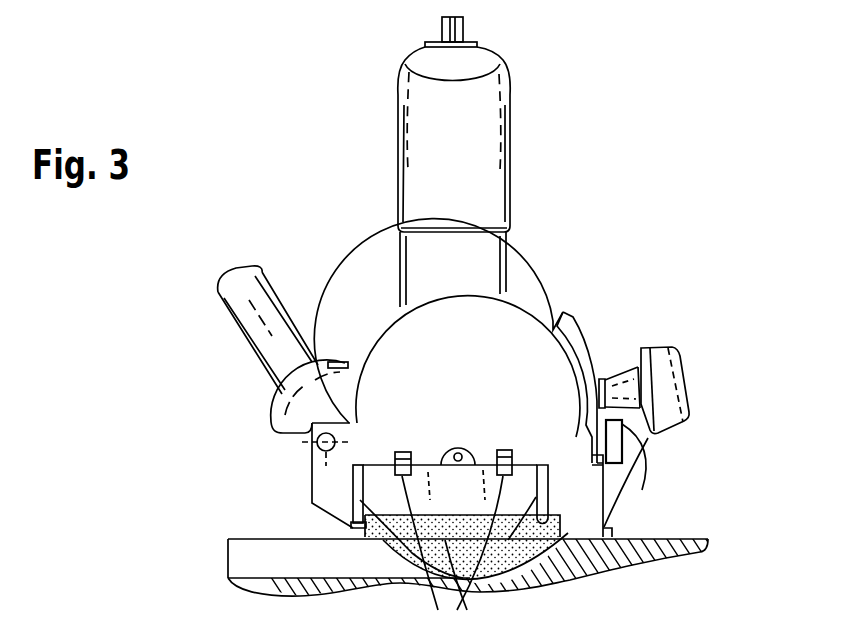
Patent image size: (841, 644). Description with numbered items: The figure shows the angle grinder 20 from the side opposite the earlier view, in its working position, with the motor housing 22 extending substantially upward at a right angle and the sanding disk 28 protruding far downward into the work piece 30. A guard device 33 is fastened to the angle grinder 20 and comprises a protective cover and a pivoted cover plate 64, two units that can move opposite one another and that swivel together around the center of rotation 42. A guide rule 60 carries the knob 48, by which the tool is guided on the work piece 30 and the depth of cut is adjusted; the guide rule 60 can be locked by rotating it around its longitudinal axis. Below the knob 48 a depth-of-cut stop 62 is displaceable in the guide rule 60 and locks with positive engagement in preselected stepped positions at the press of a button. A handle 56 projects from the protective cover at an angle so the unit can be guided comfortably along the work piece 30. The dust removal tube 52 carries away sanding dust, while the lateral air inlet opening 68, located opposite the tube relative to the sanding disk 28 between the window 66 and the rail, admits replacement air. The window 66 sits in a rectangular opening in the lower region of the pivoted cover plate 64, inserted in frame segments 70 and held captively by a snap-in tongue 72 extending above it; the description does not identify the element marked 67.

The angle grinder 20 is at (371, 128).
The motor housing 22 is at (430, 176).
The guard device 33 is at (533, 292).
The guide rule 60 is at (574, 333).
The knob 48 is at (664, 375).
The handle 56 is at (232, 276).
The center of rotation 42 is at (309, 459).
The pivoted cover plate 64 is at (330, 484).
The lateral air inlet opening 68 is at (352, 530).
The window 66 is at (373, 478).
The snap-in tongue 72 is at (458, 448).
The holding clamp 67 is at (533, 462).
The depth-of-cut stop 62 is at (638, 455).
The dust removal tube 52 is at (614, 482).
The sanding disk 28 is at (412, 556).
The frame segments 70 is at (452, 559).
The work piece 30 is at (590, 556).